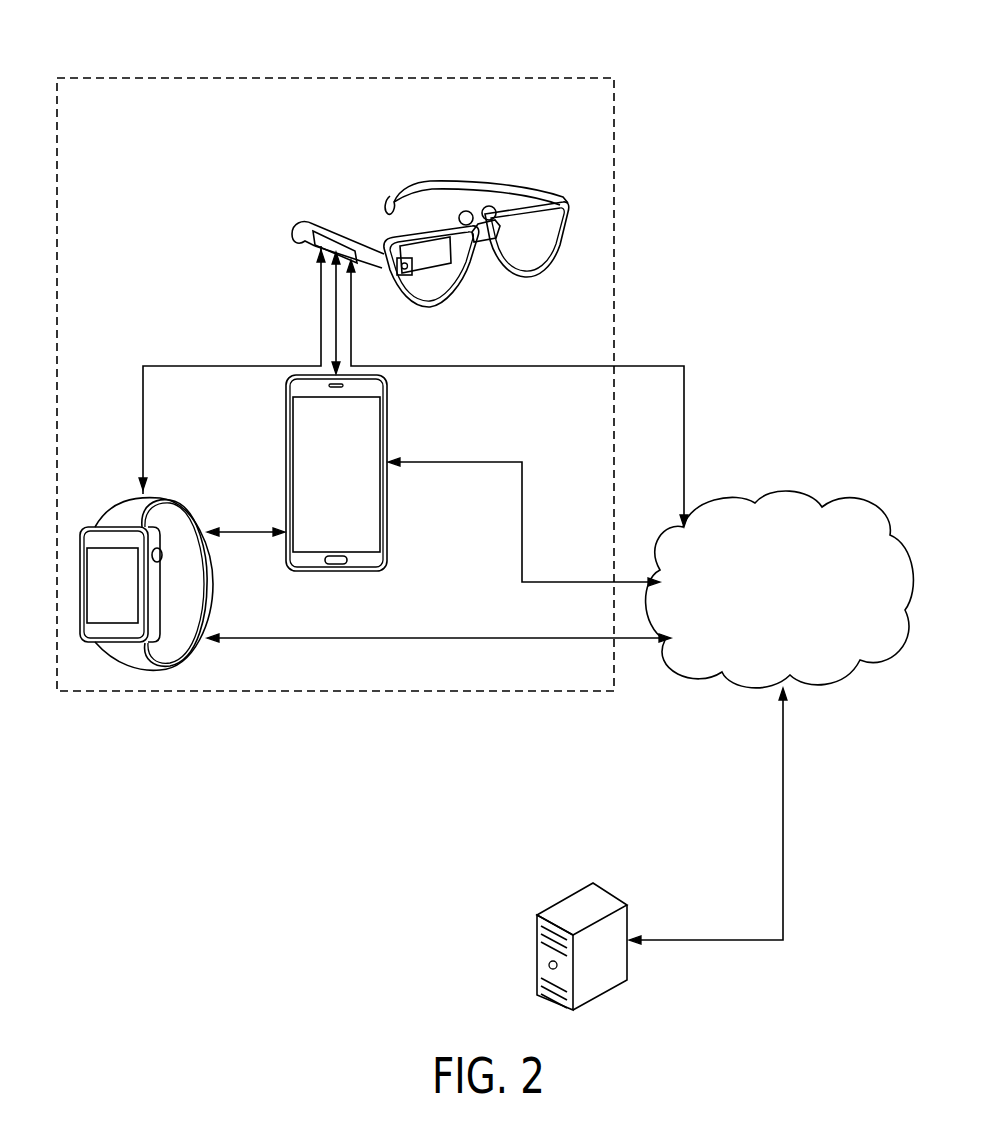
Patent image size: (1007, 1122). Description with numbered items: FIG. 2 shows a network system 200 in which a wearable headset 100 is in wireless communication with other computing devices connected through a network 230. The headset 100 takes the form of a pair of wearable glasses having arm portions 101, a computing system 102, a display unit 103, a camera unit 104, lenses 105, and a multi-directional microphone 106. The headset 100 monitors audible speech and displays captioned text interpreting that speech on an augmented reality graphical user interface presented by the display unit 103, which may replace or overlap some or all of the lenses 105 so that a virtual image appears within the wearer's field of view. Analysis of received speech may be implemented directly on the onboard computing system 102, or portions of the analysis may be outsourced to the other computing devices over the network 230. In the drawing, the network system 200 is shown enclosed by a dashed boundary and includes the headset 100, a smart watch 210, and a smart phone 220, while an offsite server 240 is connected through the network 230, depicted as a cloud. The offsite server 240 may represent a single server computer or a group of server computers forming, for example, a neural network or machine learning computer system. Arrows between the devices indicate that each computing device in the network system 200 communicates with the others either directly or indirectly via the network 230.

The headset 100 is at (439, 227).
The arm portions 101 is at (295, 215).
The computing system 102 is at (320, 238).
The display unit 103 is at (432, 250).
The camera unit 104 is at (400, 277).
The lenses 105 is at (452, 268).
The multi-directional microphone 106 is at (471, 212).
The network system 200 is at (344, 77).
The smart watch 210 is at (205, 583).
The smart phone 220 is at (388, 430).
The network 230 is at (800, 608).
The offsite server 240 is at (599, 905).